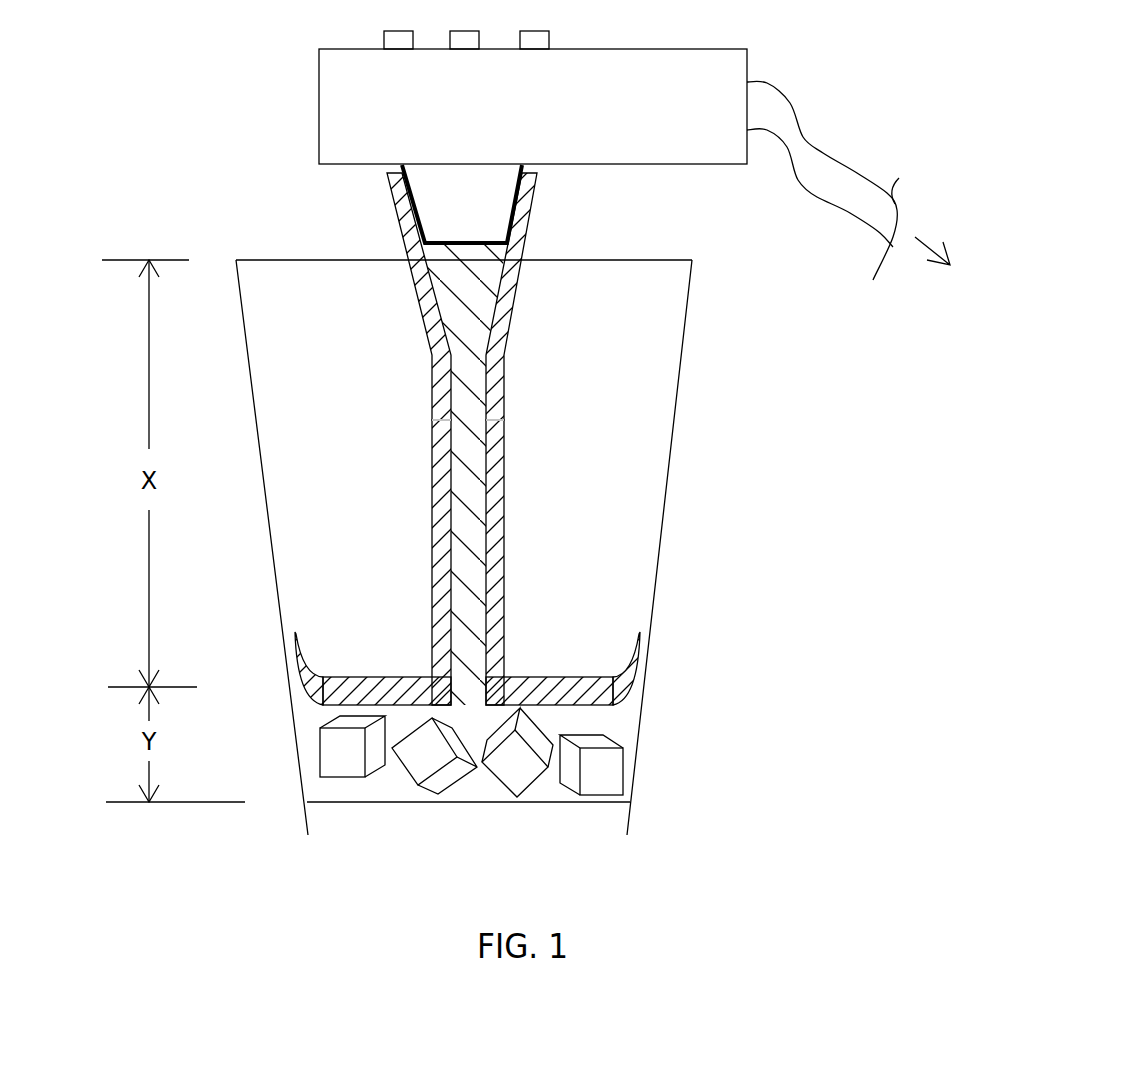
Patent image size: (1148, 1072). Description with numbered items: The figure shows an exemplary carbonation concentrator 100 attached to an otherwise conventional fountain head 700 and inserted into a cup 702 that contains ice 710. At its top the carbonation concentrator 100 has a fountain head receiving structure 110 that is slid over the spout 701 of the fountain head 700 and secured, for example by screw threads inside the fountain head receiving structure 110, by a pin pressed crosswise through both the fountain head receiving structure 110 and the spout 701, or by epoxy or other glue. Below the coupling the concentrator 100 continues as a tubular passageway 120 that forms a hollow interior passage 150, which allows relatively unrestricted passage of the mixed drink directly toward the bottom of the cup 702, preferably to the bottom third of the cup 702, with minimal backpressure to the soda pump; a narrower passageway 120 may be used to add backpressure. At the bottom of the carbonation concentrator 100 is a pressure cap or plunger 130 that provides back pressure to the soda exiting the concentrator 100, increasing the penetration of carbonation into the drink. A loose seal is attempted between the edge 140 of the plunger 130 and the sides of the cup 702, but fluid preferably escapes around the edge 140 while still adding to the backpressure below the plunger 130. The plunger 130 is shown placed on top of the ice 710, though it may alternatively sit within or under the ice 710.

The carbonation concentrator 100 is at (476, 439).
The fountain head receiving structure 110 is at (420, 318).
The tube 120 is at (433, 478).
The plunger 130 is at (368, 677).
The edge 140 is at (308, 689).
The hollow interior passage 150 is at (448, 408).
The fountain head 700 is at (600, 189).
The spout 701 is at (443, 193).
The cup 702 is at (665, 510).
The ice 710 is at (600, 773).